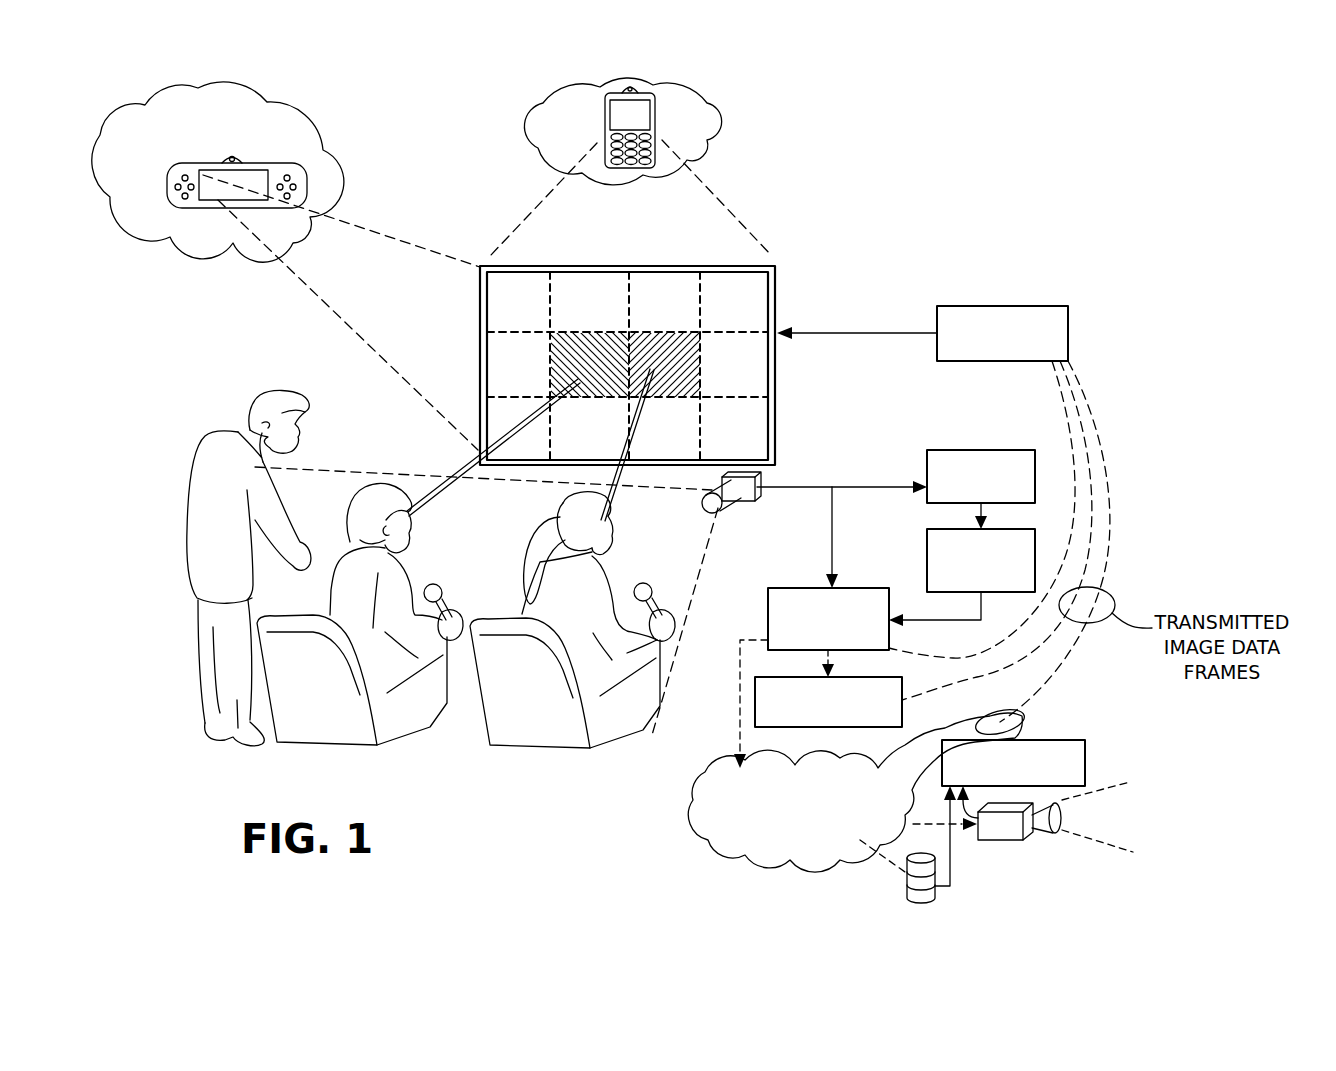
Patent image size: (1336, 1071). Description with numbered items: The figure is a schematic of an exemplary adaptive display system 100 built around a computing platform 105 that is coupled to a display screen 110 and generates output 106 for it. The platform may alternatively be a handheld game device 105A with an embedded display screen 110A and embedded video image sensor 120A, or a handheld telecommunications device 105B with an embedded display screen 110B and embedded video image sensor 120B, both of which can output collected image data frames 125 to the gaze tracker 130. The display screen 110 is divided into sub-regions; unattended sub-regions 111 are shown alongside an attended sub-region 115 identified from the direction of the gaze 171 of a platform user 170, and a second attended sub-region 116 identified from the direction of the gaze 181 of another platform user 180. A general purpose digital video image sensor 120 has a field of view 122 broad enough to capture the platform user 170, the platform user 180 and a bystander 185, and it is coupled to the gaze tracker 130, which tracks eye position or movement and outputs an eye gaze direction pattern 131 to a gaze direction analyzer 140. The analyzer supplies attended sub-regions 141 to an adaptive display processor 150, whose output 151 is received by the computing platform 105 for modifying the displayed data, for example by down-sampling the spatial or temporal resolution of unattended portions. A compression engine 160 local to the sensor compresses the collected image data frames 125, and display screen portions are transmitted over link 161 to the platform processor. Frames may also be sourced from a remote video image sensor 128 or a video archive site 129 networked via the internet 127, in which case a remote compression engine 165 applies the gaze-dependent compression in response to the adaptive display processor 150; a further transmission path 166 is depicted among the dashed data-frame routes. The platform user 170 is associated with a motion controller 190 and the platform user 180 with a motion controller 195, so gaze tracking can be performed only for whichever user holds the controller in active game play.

The adaptive display system 100 is at (928, 183).
The computing platform 105 is at (1046, 306).
The handheld game device 105A is at (190, 163).
The handheld telecommunications device 105B is at (603, 110).
The output 106 is at (838, 336).
The display screen 110 is at (780, 278).
The embedded display screen 110A is at (218, 200).
The embedded display screen 110B is at (633, 117).
The unattended sub-region 111 is at (753, 439).
The attended sub-region 115 is at (590, 365).
The attended sub-region 116 is at (664, 365).
The digital video image sensor 120 is at (742, 505).
The embedded video image sensor 120A is at (240, 160).
The embedded video image sensor 120B is at (640, 88).
The field of view 122 is at (352, 466).
The collected image data frames 125 is at (804, 485).
The internet 127 is at (775, 834).
The remote video image sensor 128 is at (1012, 840).
The video archive site 129 is at (938, 896).
The gaze tracker 130 is at (972, 450).
The eye gaze direction pattern 131 is at (988, 517).
The gaze direction analyzer 140 is at (946, 530).
The attended sub-regions 141 is at (985, 602).
The adaptive display processor 150 is at (858, 588).
The output 151 is at (998, 658).
The compression engine 160 is at (810, 678).
The link 161 is at (975, 685).
The remote compression engine 165 is at (1088, 748).
The remote transmission path 166 is at (1040, 693).
The platform user 170 is at (360, 614).
The direction of the gaze 171 is at (455, 460).
The platform user 180 is at (515, 580).
The direction of the gaze 181 is at (630, 483).
The bystander 185 is at (213, 442).
The motion controller 190 is at (445, 580).
The motion controller 195 is at (660, 580).